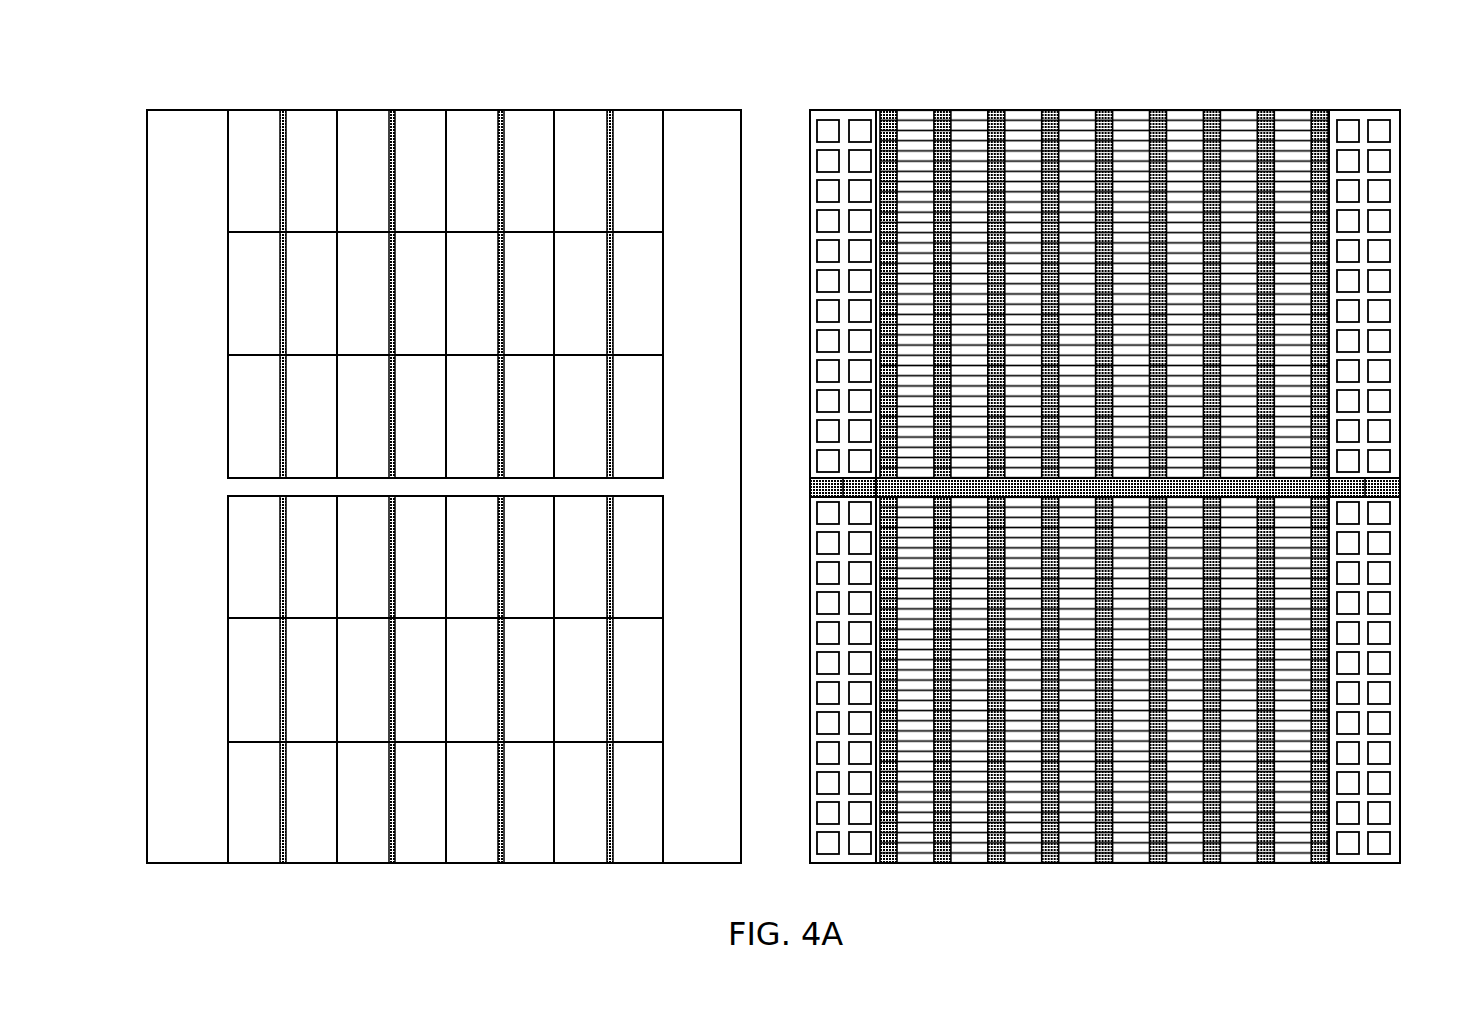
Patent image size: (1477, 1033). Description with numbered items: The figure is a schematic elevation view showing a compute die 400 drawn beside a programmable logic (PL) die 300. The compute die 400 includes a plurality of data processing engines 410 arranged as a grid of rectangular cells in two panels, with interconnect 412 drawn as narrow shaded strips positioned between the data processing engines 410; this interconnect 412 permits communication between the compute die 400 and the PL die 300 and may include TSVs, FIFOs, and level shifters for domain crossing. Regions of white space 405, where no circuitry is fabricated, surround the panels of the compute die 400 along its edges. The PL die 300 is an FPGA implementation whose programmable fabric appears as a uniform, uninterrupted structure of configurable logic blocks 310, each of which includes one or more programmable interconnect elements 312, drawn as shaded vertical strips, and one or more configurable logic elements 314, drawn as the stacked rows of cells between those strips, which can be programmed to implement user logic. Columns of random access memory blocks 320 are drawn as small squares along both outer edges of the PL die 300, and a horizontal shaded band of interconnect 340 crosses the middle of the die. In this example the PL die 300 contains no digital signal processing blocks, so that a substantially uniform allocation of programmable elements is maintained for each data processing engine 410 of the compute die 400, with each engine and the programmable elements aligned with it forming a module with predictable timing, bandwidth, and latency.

The compute die 400 is at (205, 92).
The white space 405 is at (695, 118).
The data processing engines 410 is at (251, 108).
The interconnect 412 is at (393, 108).
The programmable logic die 300 is at (1276, 94).
The configurable logic blocks 310 is at (987, 102).
The programmable interconnect elements 312 is at (1000, 110).
The configurable logic elements 314 is at (1078, 110).
The random access memory blocks 320 is at (829, 118).
The interconnect 340 is at (1400, 484).